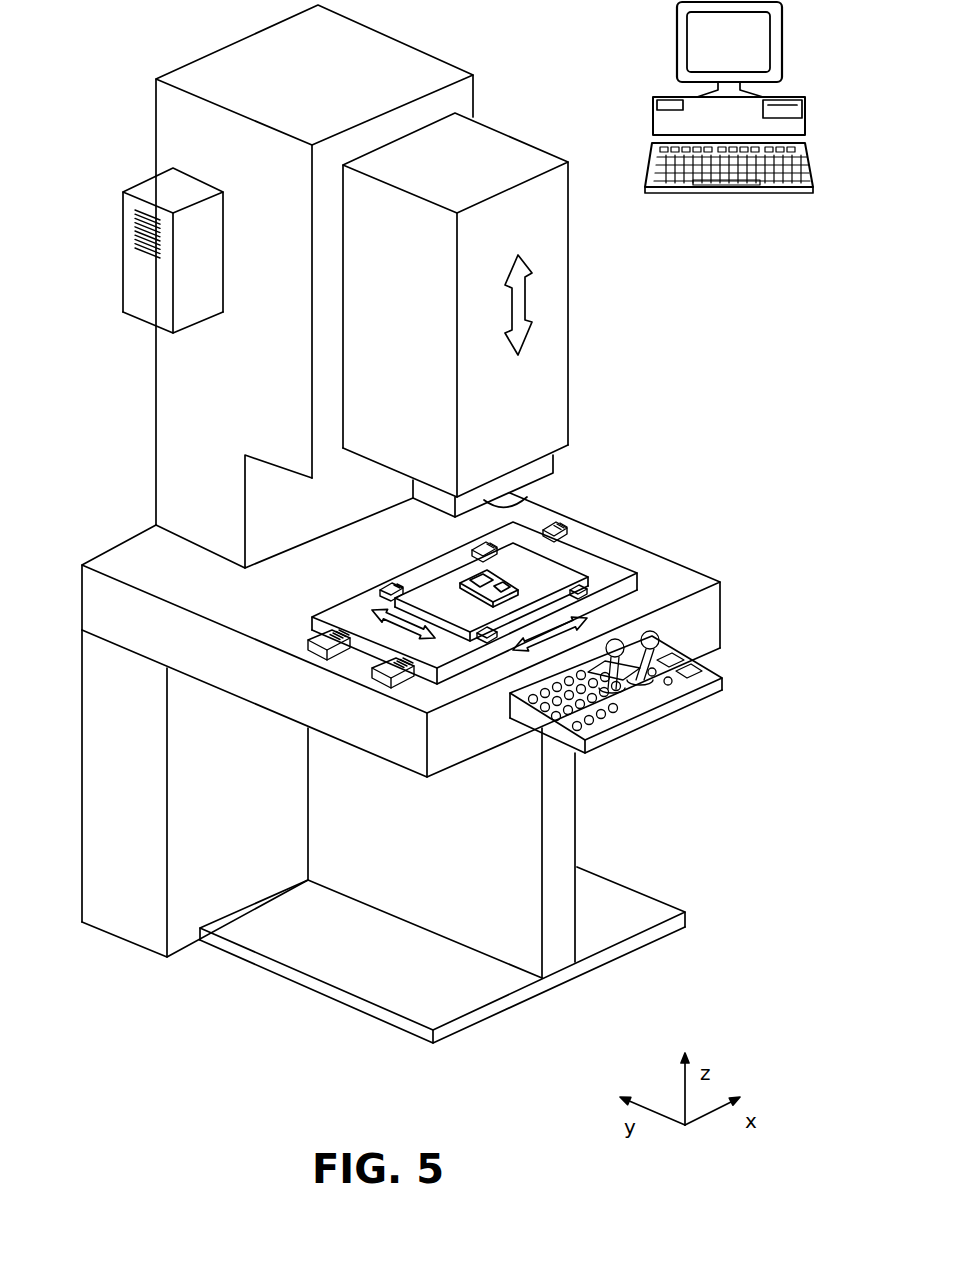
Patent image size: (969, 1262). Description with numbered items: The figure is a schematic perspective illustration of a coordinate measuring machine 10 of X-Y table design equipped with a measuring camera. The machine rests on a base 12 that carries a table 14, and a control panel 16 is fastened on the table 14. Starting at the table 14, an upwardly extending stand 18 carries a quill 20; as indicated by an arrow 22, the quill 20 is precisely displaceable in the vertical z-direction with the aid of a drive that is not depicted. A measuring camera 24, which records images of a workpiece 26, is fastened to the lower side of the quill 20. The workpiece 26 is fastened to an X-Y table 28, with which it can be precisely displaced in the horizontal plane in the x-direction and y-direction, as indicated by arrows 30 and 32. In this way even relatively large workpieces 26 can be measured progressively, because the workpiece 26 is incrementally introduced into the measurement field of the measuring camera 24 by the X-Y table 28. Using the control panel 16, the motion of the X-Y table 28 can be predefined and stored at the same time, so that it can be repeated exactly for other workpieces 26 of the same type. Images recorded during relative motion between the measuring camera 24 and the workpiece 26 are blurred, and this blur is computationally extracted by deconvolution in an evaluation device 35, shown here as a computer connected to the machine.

The coordinate measuring machine 10 is at (124, 103).
The base 12 is at (638, 901).
The table 14 is at (680, 573).
The control panel 16 is at (640, 708).
The stand 18 is at (190, 393).
The quill 20 is at (552, 375).
The arrow 22 is at (518, 290).
The measuring camera 24 is at (527, 499).
The workpiece 26 is at (485, 585).
The X-Y table 28 is at (583, 540).
The arrow 30 is at (548, 640).
The arrow 32 is at (380, 620).
The evaluation device 35 is at (822, 122).